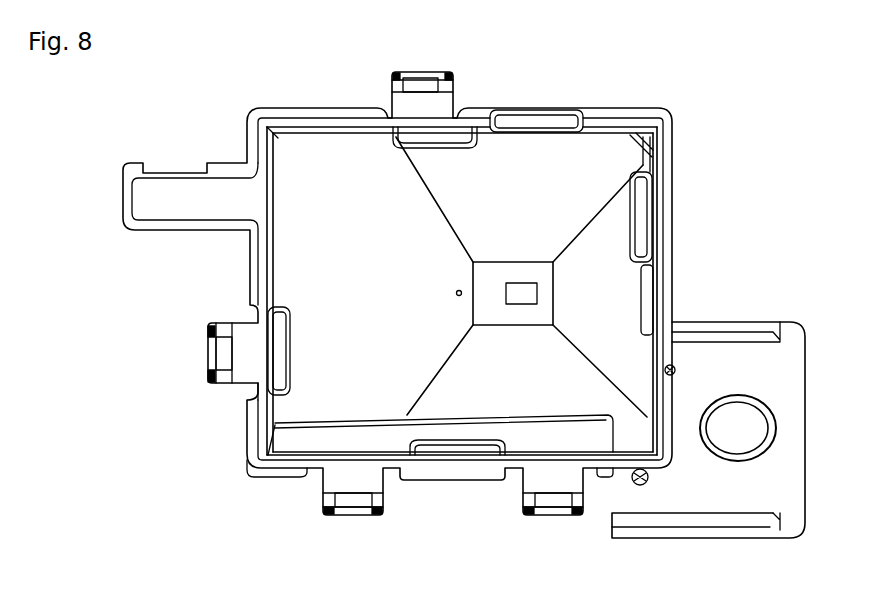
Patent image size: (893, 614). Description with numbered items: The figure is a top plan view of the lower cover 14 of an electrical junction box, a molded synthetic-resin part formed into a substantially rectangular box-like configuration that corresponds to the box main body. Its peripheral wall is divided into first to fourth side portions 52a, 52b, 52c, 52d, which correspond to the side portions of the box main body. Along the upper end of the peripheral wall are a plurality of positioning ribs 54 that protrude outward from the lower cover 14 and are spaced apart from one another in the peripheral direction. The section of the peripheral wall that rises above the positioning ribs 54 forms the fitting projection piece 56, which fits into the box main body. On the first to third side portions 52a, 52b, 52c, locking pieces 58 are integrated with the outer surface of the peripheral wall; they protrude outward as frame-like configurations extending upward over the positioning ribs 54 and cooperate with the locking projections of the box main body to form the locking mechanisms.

The lower cover 14 is at (690, 85).
The first side portion 52a is at (357, 120).
The second side portion 52b is at (258, 285).
The third side portion 52c is at (424, 468).
The fourth side portion 52d is at (660, 248).
The positioning rib 54 is at (300, 105).
The fitting projection piece 56 is at (662, 183).
The locking piece 58 is at (421, 75).